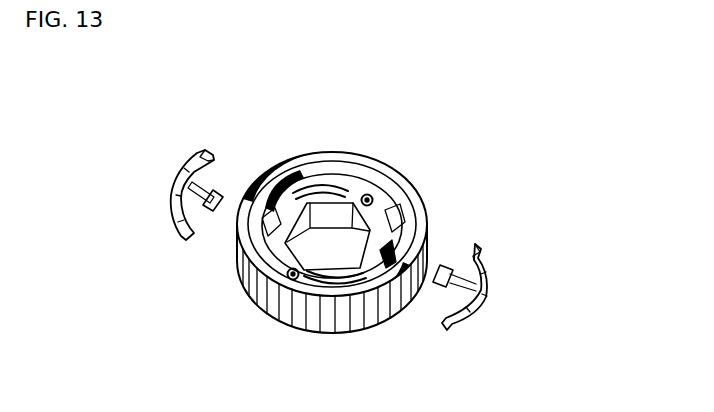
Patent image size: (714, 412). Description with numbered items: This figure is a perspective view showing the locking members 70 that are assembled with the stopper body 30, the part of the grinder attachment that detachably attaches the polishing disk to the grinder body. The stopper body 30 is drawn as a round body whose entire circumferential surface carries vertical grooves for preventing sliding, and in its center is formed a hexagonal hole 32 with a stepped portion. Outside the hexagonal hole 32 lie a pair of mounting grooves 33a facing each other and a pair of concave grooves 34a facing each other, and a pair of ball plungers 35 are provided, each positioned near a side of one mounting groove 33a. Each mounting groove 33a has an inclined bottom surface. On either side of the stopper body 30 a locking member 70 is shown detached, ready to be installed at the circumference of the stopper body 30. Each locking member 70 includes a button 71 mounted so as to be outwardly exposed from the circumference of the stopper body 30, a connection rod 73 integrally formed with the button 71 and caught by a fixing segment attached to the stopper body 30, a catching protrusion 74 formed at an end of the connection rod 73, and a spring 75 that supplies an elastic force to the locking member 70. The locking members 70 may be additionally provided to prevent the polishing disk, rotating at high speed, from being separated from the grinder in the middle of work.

The stopper body 30 is at (291, 137).
The hexagonal hole 32 is at (357, 303).
The mounting grooves 33a is at (326, 188).
The concave grooves 34a is at (385, 256).
The ball plungers 35 is at (368, 195).
The locking members 70 is at (326, 232).
The button 71 is at (168, 198).
The connection rod 73 is at (218, 178).
The catching protrusion 74 is at (212, 218).
The spring 75 is at (194, 152).